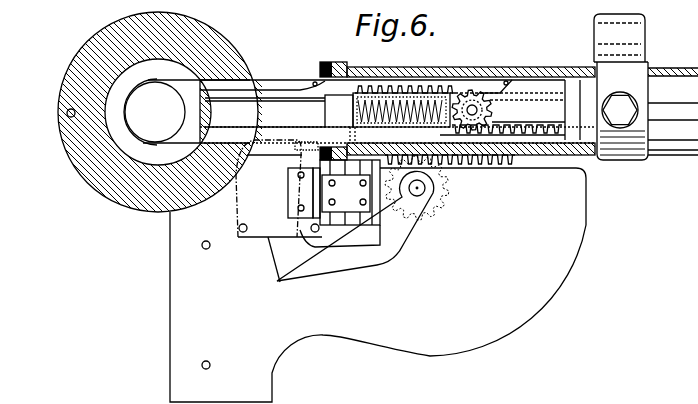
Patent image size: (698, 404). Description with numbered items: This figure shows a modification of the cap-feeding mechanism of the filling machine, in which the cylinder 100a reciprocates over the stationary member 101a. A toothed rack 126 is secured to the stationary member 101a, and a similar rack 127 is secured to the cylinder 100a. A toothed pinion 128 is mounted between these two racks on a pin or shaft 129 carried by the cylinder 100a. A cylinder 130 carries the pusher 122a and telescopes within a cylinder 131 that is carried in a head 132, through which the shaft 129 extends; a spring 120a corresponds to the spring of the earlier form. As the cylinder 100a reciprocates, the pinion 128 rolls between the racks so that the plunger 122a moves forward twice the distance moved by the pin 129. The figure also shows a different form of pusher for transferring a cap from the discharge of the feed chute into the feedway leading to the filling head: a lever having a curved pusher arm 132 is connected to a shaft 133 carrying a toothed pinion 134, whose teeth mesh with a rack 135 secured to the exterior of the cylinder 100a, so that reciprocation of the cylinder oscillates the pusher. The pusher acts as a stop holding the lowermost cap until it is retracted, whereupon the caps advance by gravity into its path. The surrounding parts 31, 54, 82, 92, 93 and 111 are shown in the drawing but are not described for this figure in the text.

The hub 31 is at (146, 203).
The hole 54 is at (66, 113).
The slot 82 is at (214, 111).
The hinge plate 92 is at (347, 223).
The hinge plate 93 is at (365, 225).
The cylinder 100a is at (397, 103).
The stationary member 101a is at (268, 87).
The clamp 111 is at (622, 8).
The spring 120a is at (397, 136).
The pusher 122a is at (343, 102).
The toothed rack 126 is at (418, 85).
The rack 127 is at (530, 150).
The toothed pinion 128 is at (492, 103).
The pin or shaft 129 is at (494, 111).
The cylinder 130 is at (372, 93).
The cylinder 131 is at (435, 92).
The head 132 is at (452, 90).
The shaft 133 is at (362, 226).
The toothed pinion 134 is at (422, 192).
The rack 135 is at (456, 157).